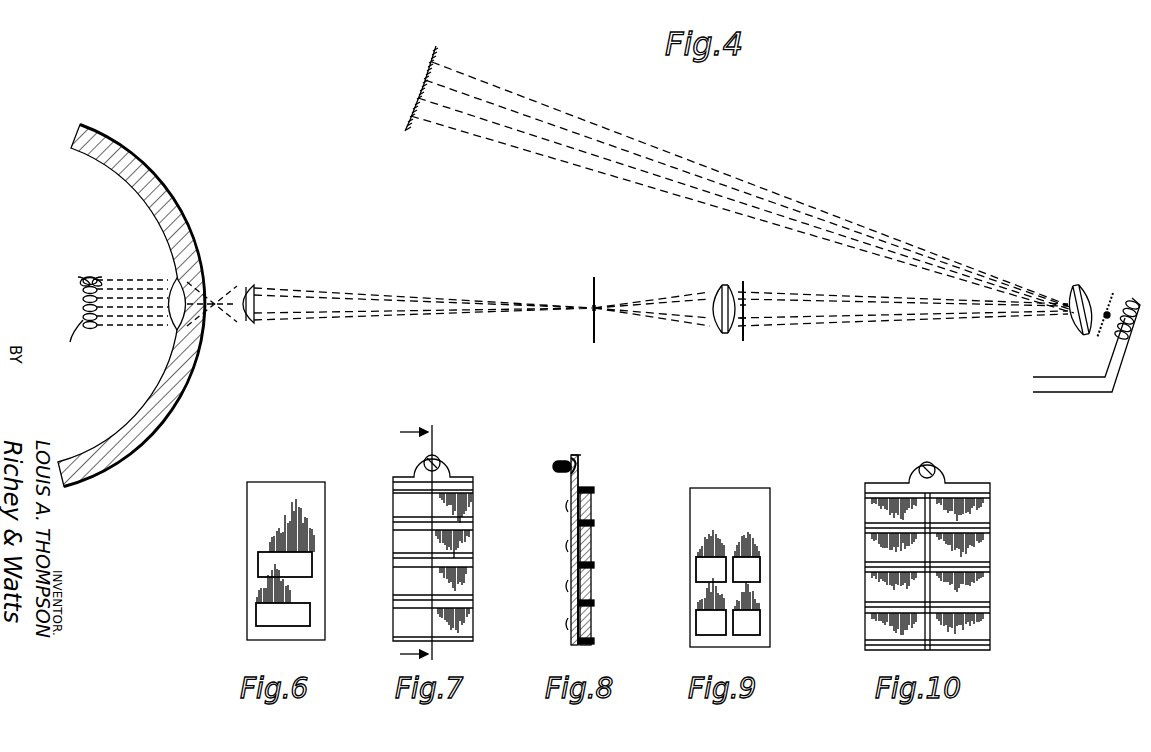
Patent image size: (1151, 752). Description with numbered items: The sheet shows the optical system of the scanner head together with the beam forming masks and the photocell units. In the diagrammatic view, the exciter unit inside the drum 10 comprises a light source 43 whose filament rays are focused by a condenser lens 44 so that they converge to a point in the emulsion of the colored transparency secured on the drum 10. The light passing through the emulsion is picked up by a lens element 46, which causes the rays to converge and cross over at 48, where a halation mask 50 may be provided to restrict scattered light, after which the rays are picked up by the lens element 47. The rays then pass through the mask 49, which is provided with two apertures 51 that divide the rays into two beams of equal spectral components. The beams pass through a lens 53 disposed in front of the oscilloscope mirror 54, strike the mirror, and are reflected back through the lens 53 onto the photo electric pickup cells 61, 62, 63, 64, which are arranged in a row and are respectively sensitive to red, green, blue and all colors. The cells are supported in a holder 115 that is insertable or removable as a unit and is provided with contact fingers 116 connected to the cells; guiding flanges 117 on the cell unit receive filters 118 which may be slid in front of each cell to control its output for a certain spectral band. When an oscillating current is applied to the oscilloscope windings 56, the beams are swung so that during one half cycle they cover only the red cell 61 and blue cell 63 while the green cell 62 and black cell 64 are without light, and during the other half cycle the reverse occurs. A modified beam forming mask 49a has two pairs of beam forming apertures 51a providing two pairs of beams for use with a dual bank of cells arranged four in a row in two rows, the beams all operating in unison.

In FIG. 4, the scanner drum 10 is at (140, 442).
In FIG. 4, the exciter lamp light source 43 is at (82, 319).
In FIG. 4, the condenser lens 44 is at (168, 324).
In FIG. 4, the lens element 46 is at (247, 288).
In FIG. 4, the lens element 47 is at (716, 288).
In FIG. 4, the cross over point 48 is at (598, 306).
In FIG. 4, the mask 49 is at (746, 292).
In FIG. 6, the mask 49 is at (257, 546).
In FIG. 9, the modified beam forming mask 49a is at (745, 520).
In FIG. 4, the halation mask 50 is at (596, 288).
In FIG. 4, the apertures 51 is at (746, 306).
In FIG. 6, the apertures 51 is at (312, 553).
In FIG. 9, the beam forming apertures 51a is at (720, 556).
In FIG. 4, the lens 53 is at (1080, 290).
In FIG. 4, the oscilloscope mirror 54 is at (1110, 293).
In FIG. 4, the oscilloscope windings 56 is at (1120, 336).
In FIG. 4, the red photo cell 61 is at (409, 117).
In FIG. 8, the red photo cell 61 is at (572, 640).
In FIG. 4, the green photo cell 62 is at (417, 100).
In FIG. 8, the green photo cell 62 is at (572, 600).
In FIG. 4, the blue photo cell 63 is at (424, 82).
In FIG. 8, the blue photo cell 63 is at (572, 562).
In FIG. 4, the black photo cell 64 is at (430, 64).
In FIG. 8, the black photo cell 64 is at (572, 520).
In FIG. 7, the holder 115 is at (455, 471).
In FIG. 8, the holder 115 is at (582, 480).
In FIG. 8, the contact fingers 116 is at (567, 624).
In FIG. 7, the guiding flanges 117 is at (396, 488).
In FIG. 8, the guiding flanges 117 is at (594, 490).
In FIG. 7, the filters 118 is at (396, 499).
In FIG. 8, the filters 118 is at (592, 500).